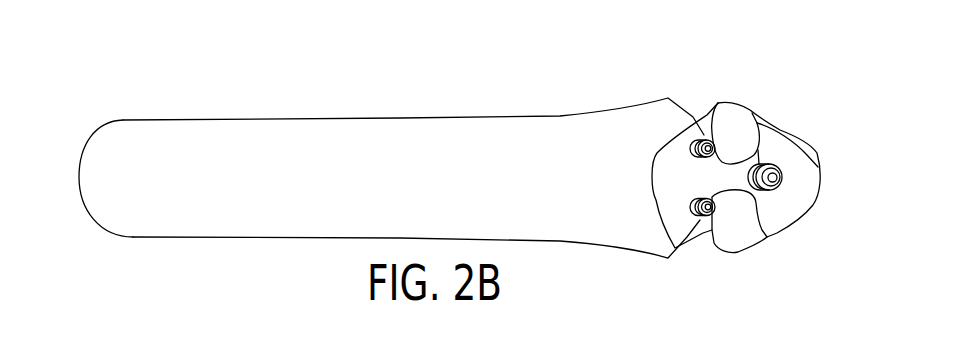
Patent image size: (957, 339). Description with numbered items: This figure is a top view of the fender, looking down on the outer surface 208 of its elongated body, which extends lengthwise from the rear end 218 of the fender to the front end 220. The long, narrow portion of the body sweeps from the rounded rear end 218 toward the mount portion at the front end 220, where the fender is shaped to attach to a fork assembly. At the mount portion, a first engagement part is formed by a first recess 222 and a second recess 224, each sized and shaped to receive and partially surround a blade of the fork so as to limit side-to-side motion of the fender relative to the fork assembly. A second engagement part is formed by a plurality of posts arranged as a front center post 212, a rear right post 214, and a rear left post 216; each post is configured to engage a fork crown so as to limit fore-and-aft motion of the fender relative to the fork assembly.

The outer surface 208 is at (297, 120).
The rear end 218 is at (82, 160).
The front end 220 is at (823, 177).
The second recess 224 is at (707, 102).
The first recess 222 is at (708, 248).
The rear left post 216 is at (701, 138).
The rear right post 214 is at (697, 235).
The front center post 212 is at (760, 150).